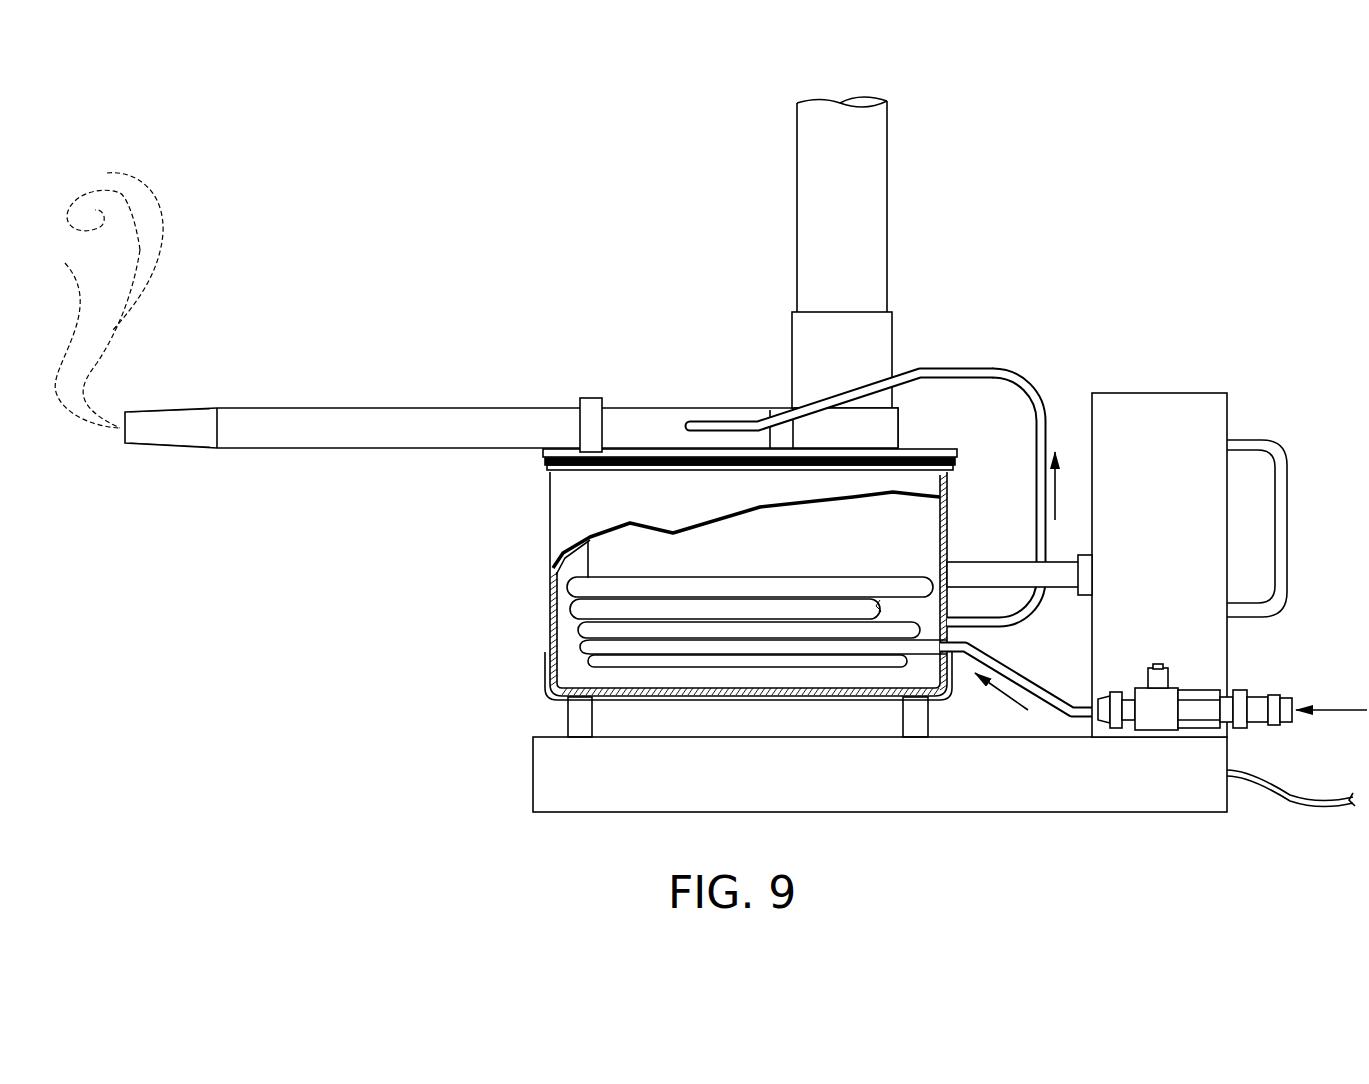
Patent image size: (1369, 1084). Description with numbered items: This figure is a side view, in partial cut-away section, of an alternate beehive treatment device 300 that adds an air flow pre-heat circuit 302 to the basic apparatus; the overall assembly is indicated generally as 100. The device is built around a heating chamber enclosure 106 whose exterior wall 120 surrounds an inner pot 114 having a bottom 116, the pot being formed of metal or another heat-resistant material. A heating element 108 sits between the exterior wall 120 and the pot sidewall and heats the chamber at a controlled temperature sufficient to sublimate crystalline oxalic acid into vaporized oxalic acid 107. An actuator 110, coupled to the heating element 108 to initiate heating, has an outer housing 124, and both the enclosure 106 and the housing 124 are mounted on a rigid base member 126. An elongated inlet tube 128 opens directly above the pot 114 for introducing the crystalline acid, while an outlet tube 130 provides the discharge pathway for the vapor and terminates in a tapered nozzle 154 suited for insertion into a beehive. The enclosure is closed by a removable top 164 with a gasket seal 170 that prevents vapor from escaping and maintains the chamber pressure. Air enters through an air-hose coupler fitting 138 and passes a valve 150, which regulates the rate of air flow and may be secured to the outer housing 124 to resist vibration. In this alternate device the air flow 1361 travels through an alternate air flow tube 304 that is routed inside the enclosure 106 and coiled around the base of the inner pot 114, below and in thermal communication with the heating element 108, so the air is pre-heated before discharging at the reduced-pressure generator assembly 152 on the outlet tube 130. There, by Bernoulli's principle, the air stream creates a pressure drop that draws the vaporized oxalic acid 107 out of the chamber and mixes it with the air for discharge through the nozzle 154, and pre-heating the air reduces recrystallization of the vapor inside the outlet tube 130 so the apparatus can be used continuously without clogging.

The smoke generating system 100 is at (362, 177).
The alternate beehive treatment device 300 is at (343, 255).
The vaporized oxalic acid 107 is at (168, 227).
The nozzle 154 is at (148, 410).
The outlet tube 130 is at (493, 405).
The inlet tube 128 is at (797, 209).
The reduced-pressure generator assembly 152 is at (760, 398).
The alternate air flow tube 304 is at (962, 368).
The air flow pre-heat circuit 302 is at (1017, 367).
The removable top 164 is at (923, 451).
The gasket seal 170 is at (953, 464).
The flow of air 1361 is at (1055, 497).
The outer housing 124 is at (1228, 522).
The actuator 110 is at (1232, 570).
The valve 150 is at (1140, 688).
The air-hose coupler fitting 138 is at (1282, 695).
The inner pot 114 is at (947, 540).
The heating element 108 is at (568, 587).
The exterior wall 120 is at (553, 603).
The bottom 116 is at (620, 672).
The heating chamber enclosure 106 is at (535, 700).
The rigid base member 126 is at (533, 775).